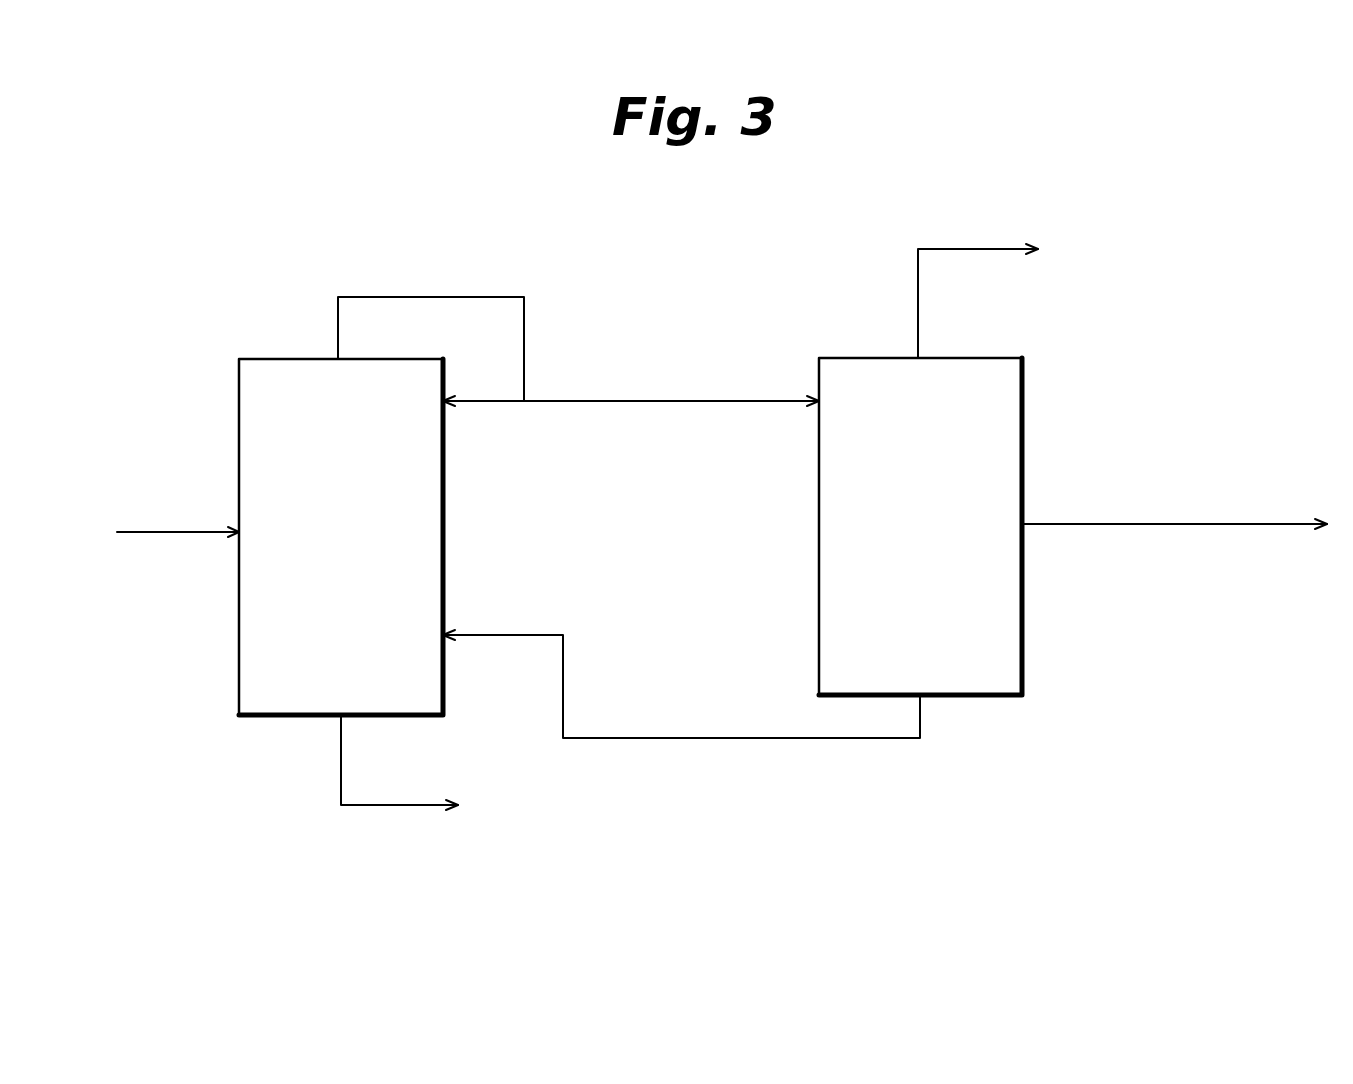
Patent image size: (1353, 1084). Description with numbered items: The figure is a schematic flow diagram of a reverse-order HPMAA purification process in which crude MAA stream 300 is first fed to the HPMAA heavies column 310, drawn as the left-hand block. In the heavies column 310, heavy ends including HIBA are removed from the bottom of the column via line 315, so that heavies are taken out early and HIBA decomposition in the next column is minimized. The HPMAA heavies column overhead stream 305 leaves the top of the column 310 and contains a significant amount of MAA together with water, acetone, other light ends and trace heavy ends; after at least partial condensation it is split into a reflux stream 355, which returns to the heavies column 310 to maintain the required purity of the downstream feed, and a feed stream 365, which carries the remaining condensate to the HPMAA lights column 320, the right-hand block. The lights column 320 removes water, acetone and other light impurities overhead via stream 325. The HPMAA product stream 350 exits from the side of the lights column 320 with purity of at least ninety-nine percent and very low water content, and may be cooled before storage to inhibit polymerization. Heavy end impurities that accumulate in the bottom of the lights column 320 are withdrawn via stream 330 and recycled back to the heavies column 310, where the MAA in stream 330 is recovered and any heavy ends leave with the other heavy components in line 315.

The crude MAA stream 300 is at (153, 532).
The HPMAA heavies column overhead stream 305 is at (440, 296).
The HPMAA heavies column 310 is at (239, 407).
The line (heavy ends bottoms stream) 315 is at (387, 805).
The HPMAA lights column 320 is at (1022, 637).
The stream (light impurities overhead) 325 is at (975, 249).
The stream (heavy ends recycle) 330 is at (710, 738).
The HPMAA product stream 350 is at (1258, 524).
The reflux stream 355 is at (485, 401).
The feed stream 365 is at (588, 401).